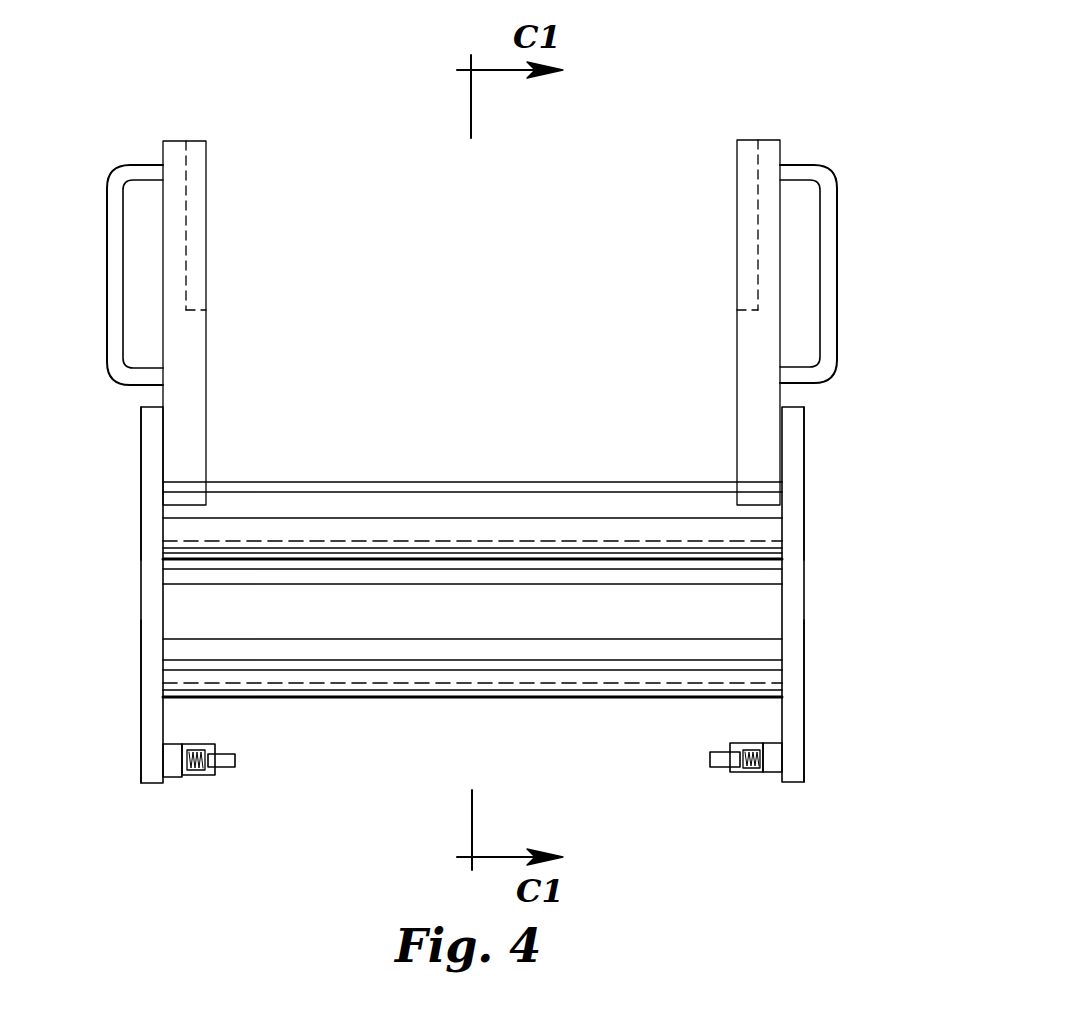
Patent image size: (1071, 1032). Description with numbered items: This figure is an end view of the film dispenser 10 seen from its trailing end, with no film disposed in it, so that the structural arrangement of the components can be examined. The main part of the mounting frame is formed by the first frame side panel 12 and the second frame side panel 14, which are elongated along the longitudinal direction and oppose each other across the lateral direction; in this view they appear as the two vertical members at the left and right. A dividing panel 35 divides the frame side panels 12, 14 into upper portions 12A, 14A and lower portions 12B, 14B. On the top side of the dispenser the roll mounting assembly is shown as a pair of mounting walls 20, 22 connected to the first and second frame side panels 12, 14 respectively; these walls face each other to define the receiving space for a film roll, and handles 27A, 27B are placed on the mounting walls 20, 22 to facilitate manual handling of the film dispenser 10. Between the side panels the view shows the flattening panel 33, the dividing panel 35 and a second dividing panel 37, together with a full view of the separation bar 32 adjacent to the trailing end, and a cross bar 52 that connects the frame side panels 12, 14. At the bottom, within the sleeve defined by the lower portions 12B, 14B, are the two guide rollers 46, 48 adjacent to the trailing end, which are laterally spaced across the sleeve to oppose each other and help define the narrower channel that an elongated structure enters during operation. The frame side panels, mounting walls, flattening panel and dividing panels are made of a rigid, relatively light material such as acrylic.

The film dispenser 10 is at (694, 76).
The first frame side panel 12 is at (138, 563).
The upper portion of first frame side panel 12A is at (148, 433).
The lower portion of first frame side panel 12B is at (152, 733).
The second frame side panel 14 is at (812, 583).
The upper portion of second frame side panel 14A is at (797, 440).
The lower portion of second frame side panel 14B is at (792, 725).
The mounting wall 20 is at (172, 140).
The mounting wall 22 is at (770, 138).
The handle 27A is at (103, 190).
The handle 27B is at (828, 180).
The separation bar 32 is at (775, 525).
The flattening panel 33 is at (346, 482).
The dividing panel 35 is at (172, 647).
The dividing panel 37 is at (170, 578).
The guide roller 46 is at (230, 762).
The guide roller 48 is at (713, 762).
The cross bar 52 is at (367, 687).